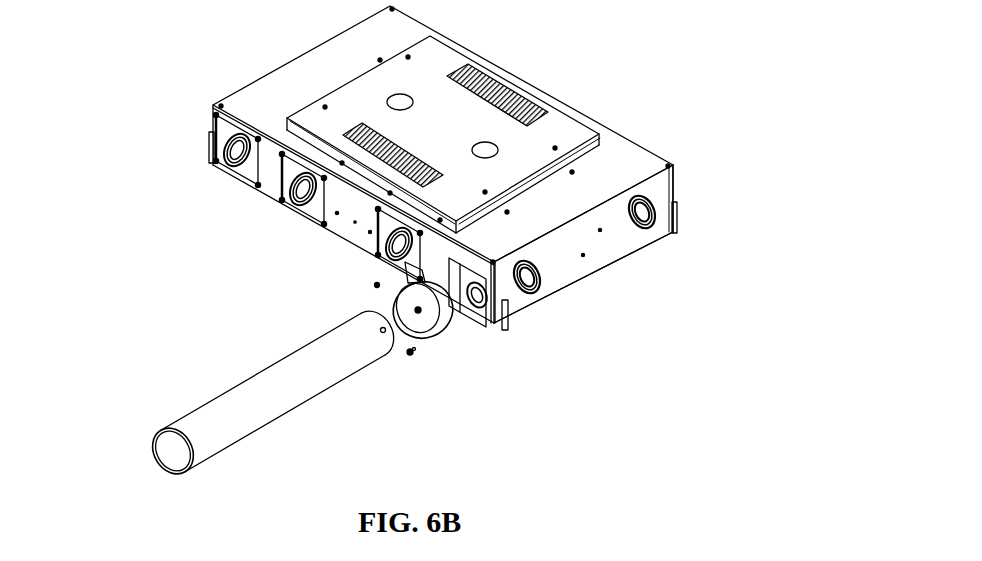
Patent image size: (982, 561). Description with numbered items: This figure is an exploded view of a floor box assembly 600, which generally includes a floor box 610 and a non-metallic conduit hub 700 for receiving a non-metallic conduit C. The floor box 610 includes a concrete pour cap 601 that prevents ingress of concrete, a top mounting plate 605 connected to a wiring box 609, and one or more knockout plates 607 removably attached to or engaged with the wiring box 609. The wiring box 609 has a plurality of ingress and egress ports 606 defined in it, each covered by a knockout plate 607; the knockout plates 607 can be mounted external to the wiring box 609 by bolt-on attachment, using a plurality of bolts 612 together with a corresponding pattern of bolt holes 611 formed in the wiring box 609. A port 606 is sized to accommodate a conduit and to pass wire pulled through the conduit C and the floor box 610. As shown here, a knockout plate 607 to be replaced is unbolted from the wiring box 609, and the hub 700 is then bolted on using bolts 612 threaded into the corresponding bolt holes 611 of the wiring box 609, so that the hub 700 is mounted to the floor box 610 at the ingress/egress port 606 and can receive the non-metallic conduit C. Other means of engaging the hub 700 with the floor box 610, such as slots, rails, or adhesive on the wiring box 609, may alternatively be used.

The floor box assembly 600 is at (148, 128).
The concrete pour cap 601 is at (312, 118).
The top mounting plate 605 is at (589, 166).
The knockout plates 607 is at (293, 212).
The wiring box 609 is at (588, 262).
The floor box 610 is at (687, 262).
The non-metallic conduit hub 700 is at (393, 298).
The ingress/egress ports 606 is at (467, 296).
The bolt holes 611 is at (485, 311).
The bolts 612 is at (410, 352).
The non-metallic conduit C is at (223, 378).